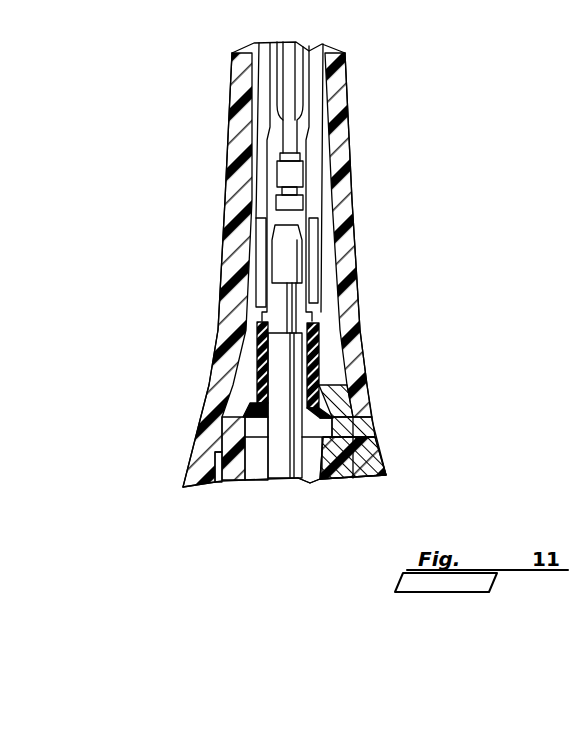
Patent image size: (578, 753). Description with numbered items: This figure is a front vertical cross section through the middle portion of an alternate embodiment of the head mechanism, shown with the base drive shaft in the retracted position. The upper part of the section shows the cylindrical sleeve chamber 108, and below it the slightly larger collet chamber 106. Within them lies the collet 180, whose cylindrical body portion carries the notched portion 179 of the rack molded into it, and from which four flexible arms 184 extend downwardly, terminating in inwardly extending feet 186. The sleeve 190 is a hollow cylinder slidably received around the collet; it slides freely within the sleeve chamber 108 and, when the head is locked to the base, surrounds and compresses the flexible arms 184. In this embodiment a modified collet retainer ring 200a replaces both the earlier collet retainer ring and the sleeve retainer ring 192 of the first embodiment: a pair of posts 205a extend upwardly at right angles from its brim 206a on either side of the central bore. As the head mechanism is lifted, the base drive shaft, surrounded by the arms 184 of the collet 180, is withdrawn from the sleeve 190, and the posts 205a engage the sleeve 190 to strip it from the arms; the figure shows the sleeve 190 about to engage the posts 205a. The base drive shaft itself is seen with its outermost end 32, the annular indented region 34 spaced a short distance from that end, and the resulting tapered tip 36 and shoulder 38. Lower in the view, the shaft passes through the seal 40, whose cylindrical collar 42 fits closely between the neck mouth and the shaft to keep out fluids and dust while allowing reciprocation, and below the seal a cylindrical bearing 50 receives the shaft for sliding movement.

The collet chamber 106 is at (222, 398).
The sleeve chamber 108 is at (313, 103).
The notched portion 179 is at (280, 181).
The collet 180 is at (280, 206).
The outermost end 32 is at (314, 220).
The sleeve 190 is at (318, 243).
The tip 36 is at (262, 260).
The shoulder 38 is at (268, 282).
The annular indented region 34 is at (283, 298).
The flexible arms 184 is at (303, 252).
The feet 186 is at (300, 290).
The sleeve retainer ring 192 is at (258, 348).
The posts 205a is at (318, 312).
The collet retainer ring 200a is at (303, 360).
The brim 206a is at (345, 404).
The cylindrical collar 42 is at (360, 428).
The seal 40 is at (375, 460).
The cylindrical bearing 50 is at (318, 481).